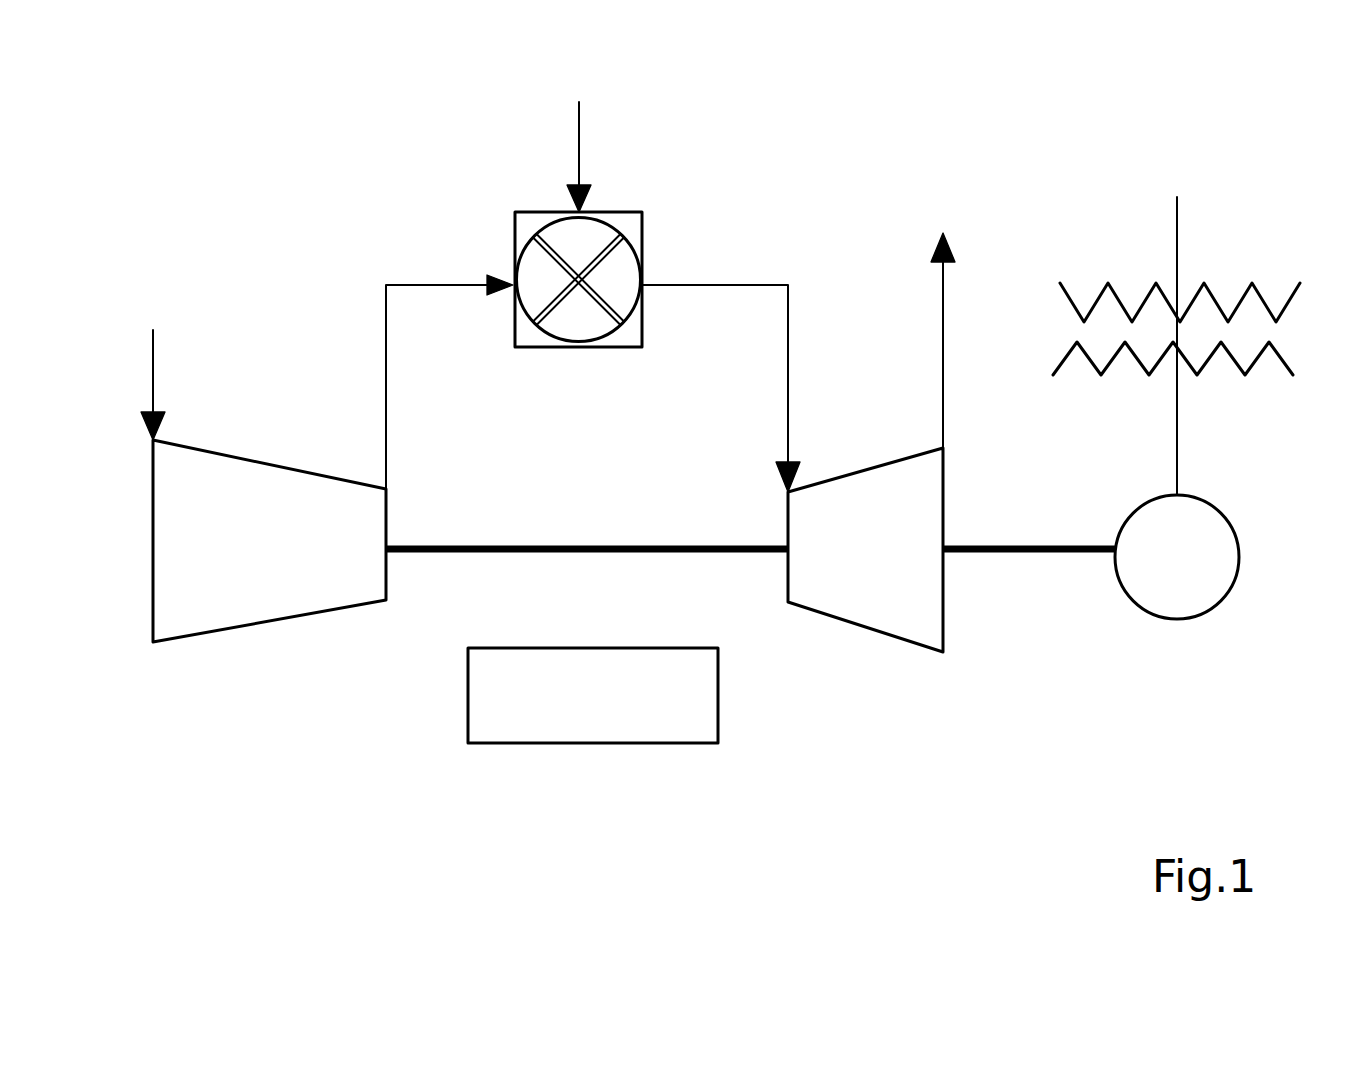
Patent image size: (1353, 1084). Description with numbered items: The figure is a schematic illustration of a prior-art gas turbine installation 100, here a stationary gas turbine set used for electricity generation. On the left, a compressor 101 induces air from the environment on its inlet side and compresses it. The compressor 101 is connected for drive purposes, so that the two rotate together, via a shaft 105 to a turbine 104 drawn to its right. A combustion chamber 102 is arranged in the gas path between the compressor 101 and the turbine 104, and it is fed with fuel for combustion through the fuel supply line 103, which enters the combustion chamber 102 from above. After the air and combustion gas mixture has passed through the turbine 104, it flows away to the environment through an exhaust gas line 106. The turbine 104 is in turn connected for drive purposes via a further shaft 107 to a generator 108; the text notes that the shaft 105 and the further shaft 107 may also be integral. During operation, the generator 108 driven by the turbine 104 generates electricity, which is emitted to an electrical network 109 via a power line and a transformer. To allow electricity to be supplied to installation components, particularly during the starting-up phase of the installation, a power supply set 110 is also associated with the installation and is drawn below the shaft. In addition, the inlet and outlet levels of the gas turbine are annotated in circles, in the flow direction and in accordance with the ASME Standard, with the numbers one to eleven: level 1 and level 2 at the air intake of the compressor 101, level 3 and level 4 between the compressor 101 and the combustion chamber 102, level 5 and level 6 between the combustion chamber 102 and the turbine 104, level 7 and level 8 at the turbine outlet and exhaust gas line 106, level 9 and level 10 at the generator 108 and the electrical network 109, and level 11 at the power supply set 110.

The gas turbine installation 100 is at (212, 169).
The compressor 101 is at (269, 541).
The combustion chamber 102 is at (642, 247).
The fuel supply line 103 is at (579, 142).
The turbine 104 is at (865, 550).
The shaft 105 is at (560, 546).
The exhaust gas line 106 is at (945, 275).
The further shaft 107 is at (1055, 556).
The generator 108 is at (1177, 557).
The electrical network 109 is at (1177, 225).
The power supply set 110 is at (593, 695).
The inlet/outlet level 1 is at (181, 356).
The inlet/outlet level 2 is at (199, 408).
The inlet/outlet level 3 is at (417, 382).
The inlet/outlet level 4 is at (473, 327).
The inlet/outlet level 5 is at (721, 388).
The inlet/outlet level 6 is at (745, 475).
The inlet/outlet level 7 is at (982, 455).
The inlet/outlet level 8 is at (896, 266).
The inlet/outlet level 9 is at (1285, 563).
The inlet/outlet level 10 is at (1325, 335).
The inlet/outlet level 11 is at (598, 788).